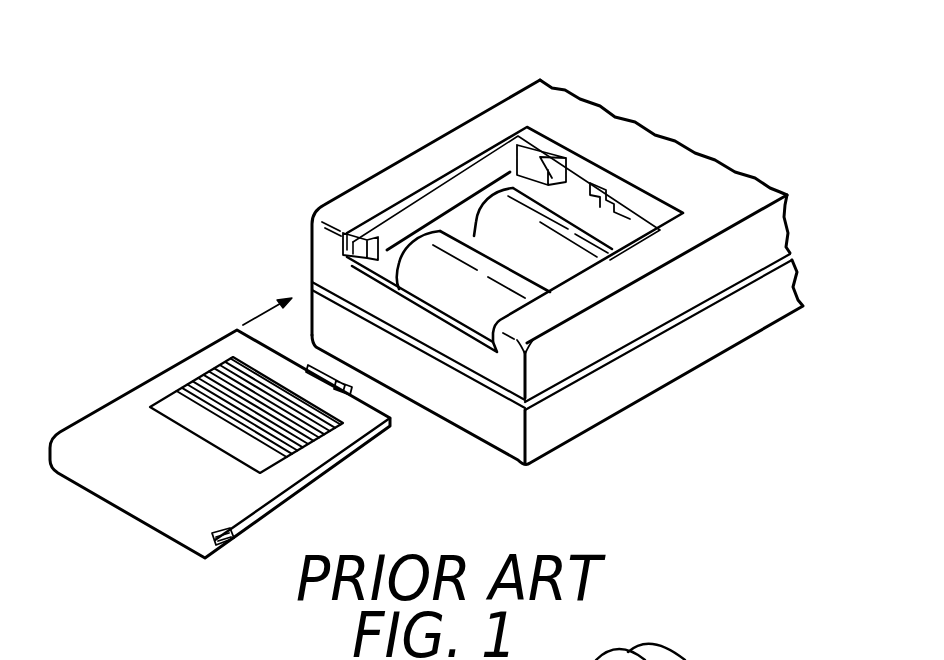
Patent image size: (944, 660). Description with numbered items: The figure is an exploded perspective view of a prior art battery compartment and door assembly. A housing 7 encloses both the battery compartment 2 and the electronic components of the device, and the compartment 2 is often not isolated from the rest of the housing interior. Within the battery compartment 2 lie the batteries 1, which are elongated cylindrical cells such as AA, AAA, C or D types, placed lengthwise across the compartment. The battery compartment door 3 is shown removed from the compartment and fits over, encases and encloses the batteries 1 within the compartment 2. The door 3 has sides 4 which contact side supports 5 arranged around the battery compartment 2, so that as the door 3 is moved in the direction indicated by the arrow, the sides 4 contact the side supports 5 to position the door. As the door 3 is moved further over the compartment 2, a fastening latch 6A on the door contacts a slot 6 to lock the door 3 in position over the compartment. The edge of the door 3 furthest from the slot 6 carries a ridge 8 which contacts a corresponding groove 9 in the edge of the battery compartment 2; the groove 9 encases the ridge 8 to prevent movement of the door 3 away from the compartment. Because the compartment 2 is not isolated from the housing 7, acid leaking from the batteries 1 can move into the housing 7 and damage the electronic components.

The batteries 1 is at (412, 247).
The battery compartment 2 is at (487, 243).
The battery compartment door 3 is at (127, 422).
The sides 4 is at (145, 383).
The side supports 5 is at (470, 232).
The slot 6 is at (605, 195).
The fastening latch 6A is at (352, 388).
The housing 7 is at (663, 367).
The ridge 8 is at (222, 545).
The groove 9 is at (340, 258).